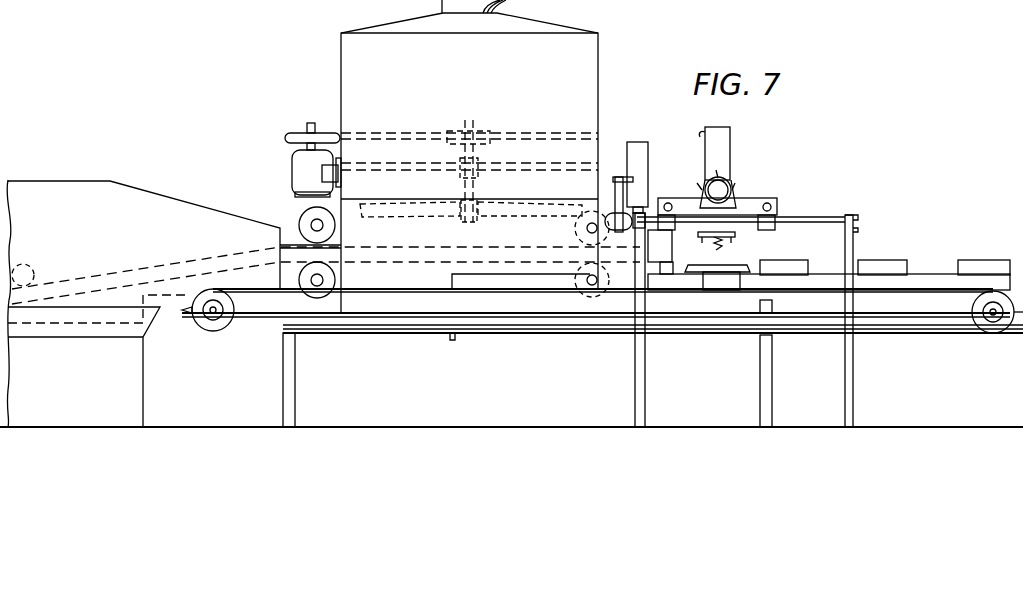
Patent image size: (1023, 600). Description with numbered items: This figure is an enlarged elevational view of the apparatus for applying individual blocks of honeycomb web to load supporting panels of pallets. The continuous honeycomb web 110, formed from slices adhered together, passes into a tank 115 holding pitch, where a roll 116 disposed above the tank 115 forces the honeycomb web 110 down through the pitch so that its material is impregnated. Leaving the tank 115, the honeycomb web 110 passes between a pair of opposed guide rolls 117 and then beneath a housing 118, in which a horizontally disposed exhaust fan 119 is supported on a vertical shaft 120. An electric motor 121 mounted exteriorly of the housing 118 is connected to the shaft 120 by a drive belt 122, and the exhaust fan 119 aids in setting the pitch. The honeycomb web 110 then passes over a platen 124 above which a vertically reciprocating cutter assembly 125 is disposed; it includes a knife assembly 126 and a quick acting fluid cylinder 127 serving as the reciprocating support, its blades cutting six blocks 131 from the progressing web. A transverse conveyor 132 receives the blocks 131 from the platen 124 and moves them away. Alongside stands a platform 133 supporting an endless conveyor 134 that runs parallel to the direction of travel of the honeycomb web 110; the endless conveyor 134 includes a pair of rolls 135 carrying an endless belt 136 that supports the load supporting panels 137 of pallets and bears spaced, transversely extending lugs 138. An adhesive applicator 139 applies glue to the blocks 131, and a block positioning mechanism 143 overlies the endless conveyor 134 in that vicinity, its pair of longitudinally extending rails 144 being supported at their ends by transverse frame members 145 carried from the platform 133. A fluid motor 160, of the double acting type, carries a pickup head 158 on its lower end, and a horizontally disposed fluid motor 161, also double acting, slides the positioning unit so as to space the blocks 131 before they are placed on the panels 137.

The honeycomb web 110 is at (182, 262).
The tank 115 is at (88, 325).
The roll 116 is at (32, 265).
The guide rolls 117 is at (300, 222).
The housing 118 is at (592, 127).
The exhaust fan 119 is at (490, 220).
The shaft 120 is at (475, 158).
The electric motor 121 is at (292, 165).
The drive belt 122 is at (415, 130).
The platen 124 is at (655, 268).
The cutter assembly 125 is at (663, 157).
The knife assembly 126 is at (686, 238).
The fluid cylinder 127 is at (644, 192).
The blocks 131 is at (805, 262).
The transverse conveyor 132 is at (748, 275).
The platform 133 is at (295, 365).
The endless conveyor 134 is at (401, 342).
The rolls 135 is at (222, 330).
The endless belt 136 is at (603, 335).
The load supporting panels 137 is at (690, 283).
The lugs 138 is at (452, 341).
The adhesive applicator 139 is at (722, 286).
The block positioning mechanism 143 is at (800, 180).
The rails 144 is at (805, 216).
The transverse frame members 145 is at (612, 218).
The pickup head 158 is at (738, 250).
The fluid motor 160 is at (725, 143).
The fluid motor 161 is at (724, 192).